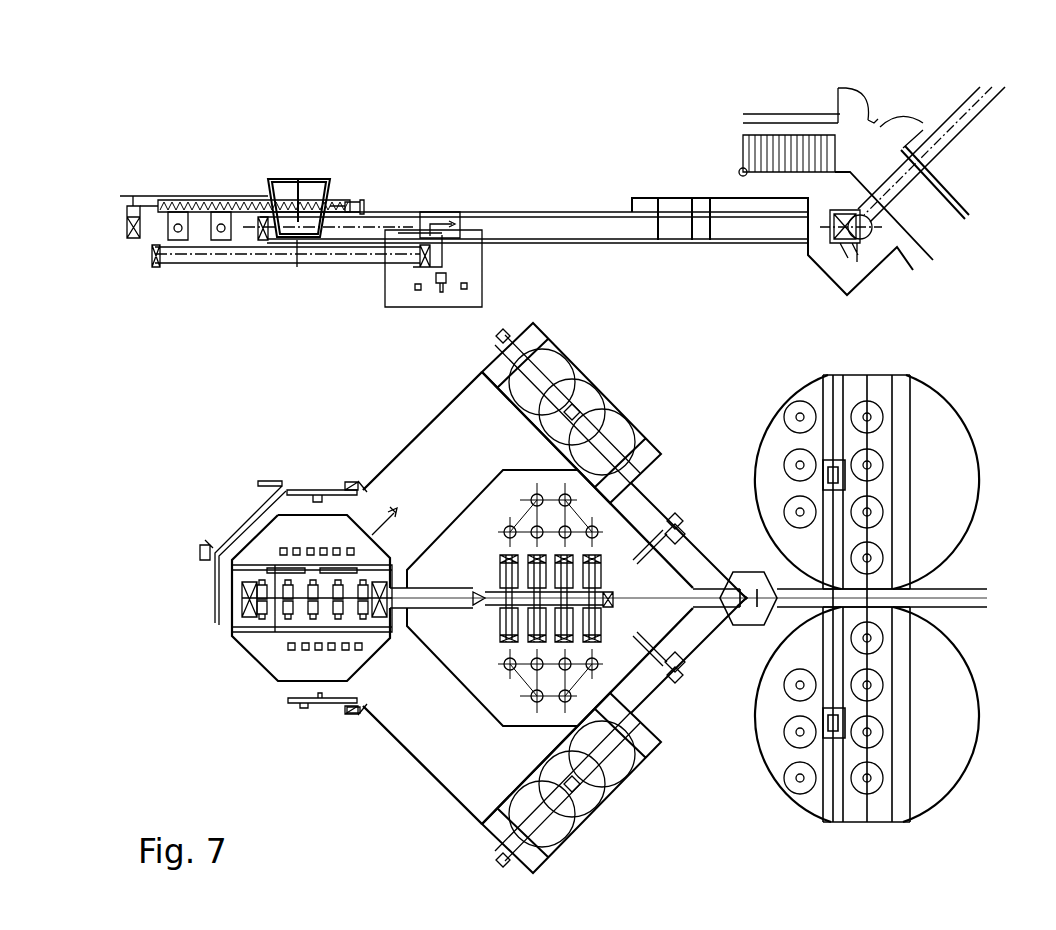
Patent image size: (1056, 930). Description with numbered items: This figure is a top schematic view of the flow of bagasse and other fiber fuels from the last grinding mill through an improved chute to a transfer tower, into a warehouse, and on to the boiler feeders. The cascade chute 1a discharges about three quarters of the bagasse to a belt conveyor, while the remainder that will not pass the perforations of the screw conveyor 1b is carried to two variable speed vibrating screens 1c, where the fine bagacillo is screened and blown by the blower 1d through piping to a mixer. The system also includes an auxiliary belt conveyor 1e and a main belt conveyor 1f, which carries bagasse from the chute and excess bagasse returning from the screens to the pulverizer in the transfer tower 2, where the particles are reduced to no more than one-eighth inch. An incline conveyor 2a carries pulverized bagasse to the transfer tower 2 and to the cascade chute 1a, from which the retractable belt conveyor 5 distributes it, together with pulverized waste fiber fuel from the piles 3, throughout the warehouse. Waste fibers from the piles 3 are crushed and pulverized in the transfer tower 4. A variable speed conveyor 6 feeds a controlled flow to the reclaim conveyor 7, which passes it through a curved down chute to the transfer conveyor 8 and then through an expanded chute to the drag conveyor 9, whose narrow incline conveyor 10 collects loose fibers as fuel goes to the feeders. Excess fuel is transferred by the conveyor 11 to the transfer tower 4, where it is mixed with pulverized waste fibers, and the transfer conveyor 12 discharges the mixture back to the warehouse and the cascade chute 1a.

The cascade chute 1a is at (307, 193).
The screw conveyor 1b is at (353, 198).
The vibrating screens 1c is at (220, 222).
The blower 1d is at (132, 203).
The auxiliary belt conveyor 1e is at (287, 256).
The main belt conveyor 1f is at (543, 211).
The transfer tower 2 is at (842, 233).
The incline conveyor 2a is at (971, 126).
The piles 3 is at (951, 523).
The transfer tower 4 is at (745, 569).
The retractable belt conveyor 5 is at (553, 382).
The variable speed conveyor 6 is at (530, 827).
The reclaim conveyor 7 is at (578, 437).
The transfer conveyor 8 is at (645, 548).
The drag conveyor 9 is at (498, 585).
The incline conveyor 10 is at (470, 611).
The conveyor 11 is at (652, 562).
The transfer conveyor 12 is at (661, 491).